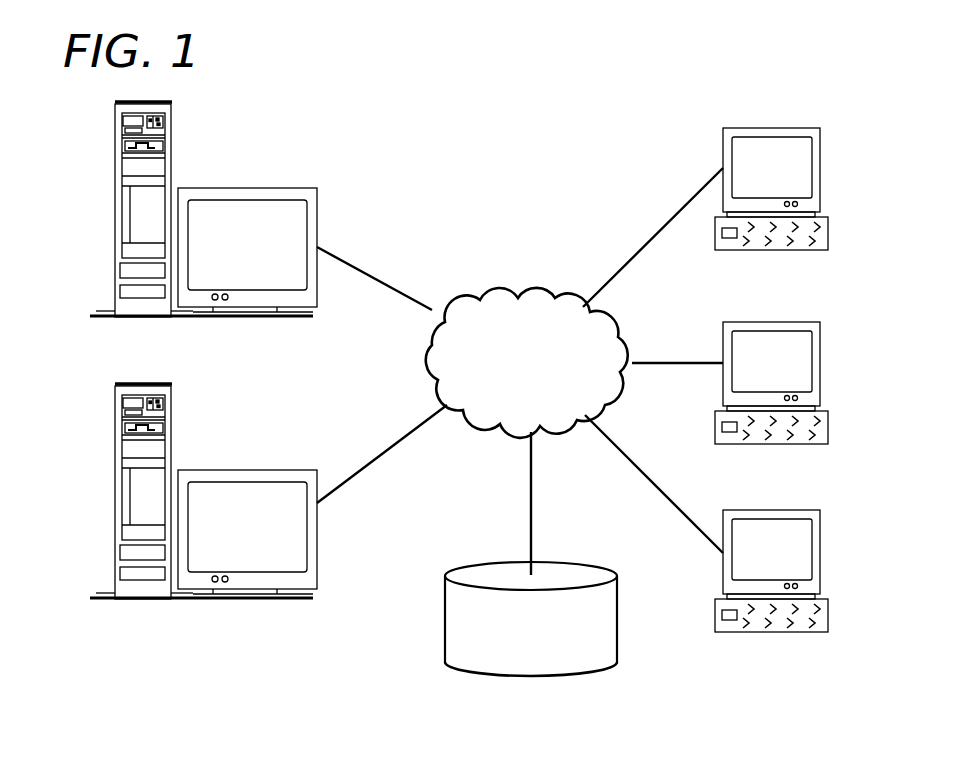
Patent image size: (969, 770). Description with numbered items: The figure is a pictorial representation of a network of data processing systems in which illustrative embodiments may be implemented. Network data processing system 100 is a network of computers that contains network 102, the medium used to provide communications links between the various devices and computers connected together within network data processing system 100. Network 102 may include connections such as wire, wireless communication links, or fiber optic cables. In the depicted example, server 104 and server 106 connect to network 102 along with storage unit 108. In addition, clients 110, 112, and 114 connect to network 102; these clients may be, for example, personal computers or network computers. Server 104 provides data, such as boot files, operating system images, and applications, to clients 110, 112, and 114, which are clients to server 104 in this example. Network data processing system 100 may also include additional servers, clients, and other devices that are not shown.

The network data processing system 100 is at (598, 142).
The network 102 is at (490, 298).
The server 104 is at (114, 210).
The server 106 is at (114, 492).
The storage unit 108 is at (504, 677).
The client 110 is at (820, 168).
The client 112 is at (820, 362).
The client 114 is at (820, 553).